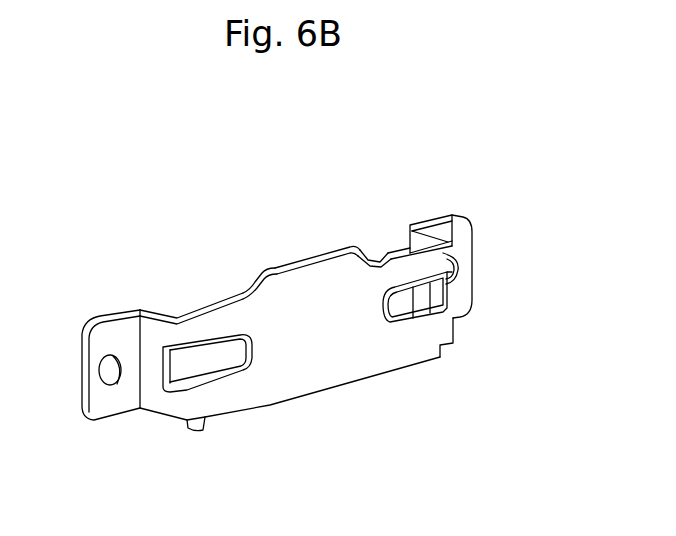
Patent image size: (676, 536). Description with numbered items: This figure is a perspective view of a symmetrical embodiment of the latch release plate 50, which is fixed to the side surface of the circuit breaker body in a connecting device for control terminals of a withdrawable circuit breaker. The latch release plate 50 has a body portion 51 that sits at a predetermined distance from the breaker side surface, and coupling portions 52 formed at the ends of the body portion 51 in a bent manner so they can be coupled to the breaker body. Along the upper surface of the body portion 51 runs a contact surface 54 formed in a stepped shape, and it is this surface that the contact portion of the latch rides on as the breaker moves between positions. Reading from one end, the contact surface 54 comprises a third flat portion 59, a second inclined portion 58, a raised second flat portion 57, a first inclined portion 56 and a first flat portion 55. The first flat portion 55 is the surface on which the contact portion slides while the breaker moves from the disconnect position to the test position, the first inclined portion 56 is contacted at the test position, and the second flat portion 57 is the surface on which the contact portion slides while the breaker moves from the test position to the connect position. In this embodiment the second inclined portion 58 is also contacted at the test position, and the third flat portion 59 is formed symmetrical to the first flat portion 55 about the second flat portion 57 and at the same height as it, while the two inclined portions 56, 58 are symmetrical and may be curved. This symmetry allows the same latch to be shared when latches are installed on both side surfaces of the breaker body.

The latch release plate 50 is at (112, 222).
The body portion 51 is at (318, 376).
The coupling portion 52 is at (463, 288).
The contact surface 54 is at (420, 163).
The first flat portion 55 is at (403, 245).
The first inclined portion 56 is at (370, 258).
The second flat portion 57 is at (307, 262).
The second inclined portion 58 is at (255, 285).
The third flat portion 59 is at (210, 305).